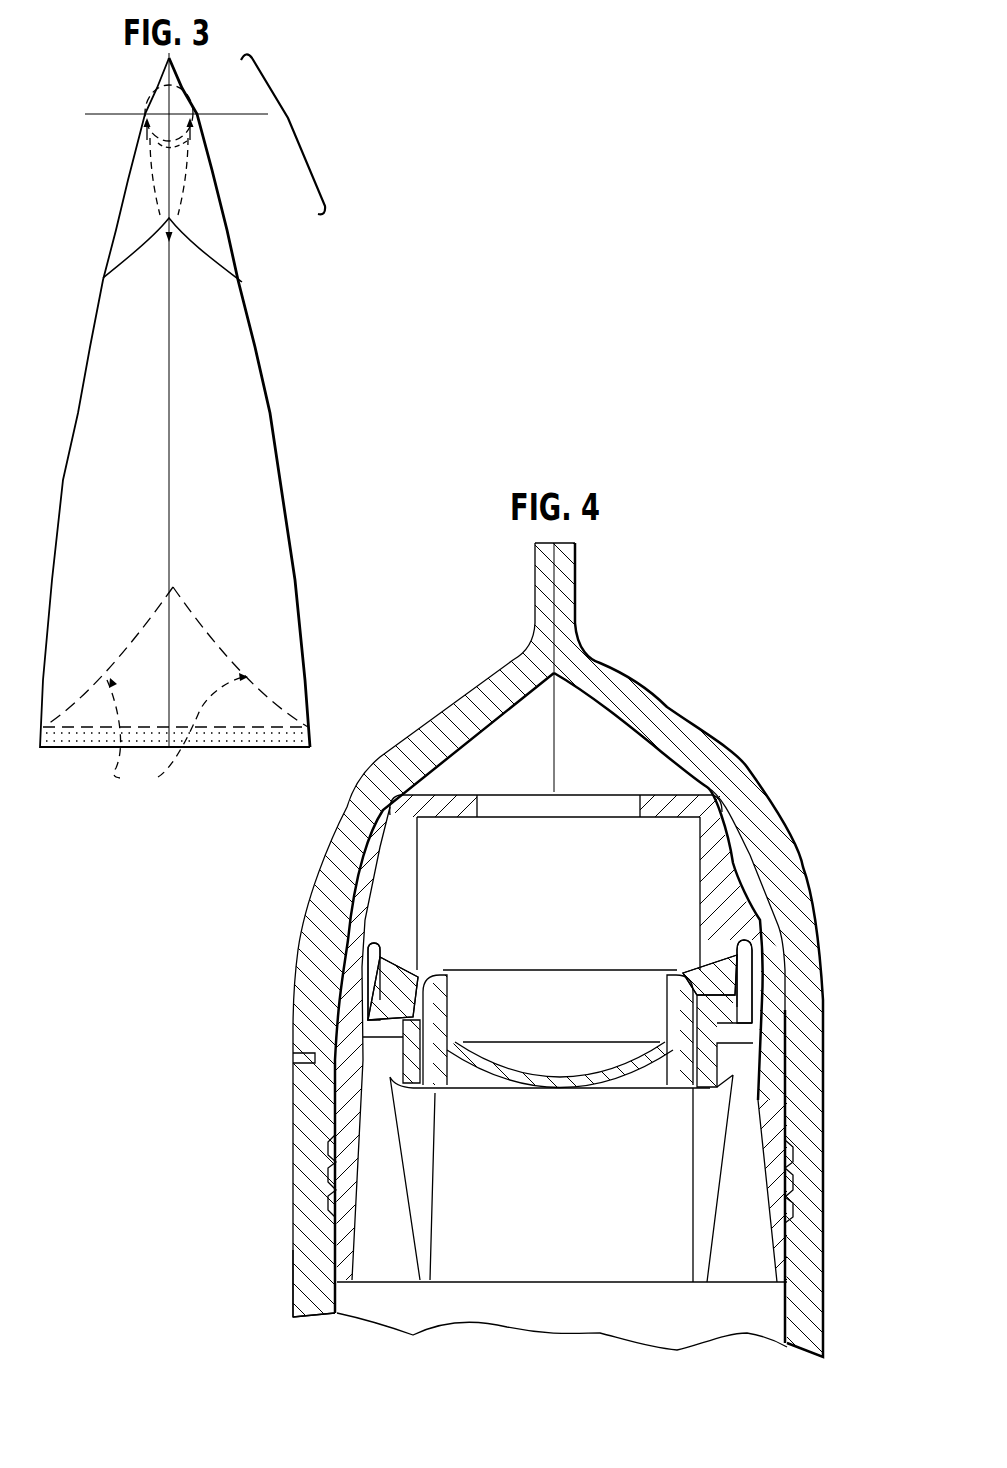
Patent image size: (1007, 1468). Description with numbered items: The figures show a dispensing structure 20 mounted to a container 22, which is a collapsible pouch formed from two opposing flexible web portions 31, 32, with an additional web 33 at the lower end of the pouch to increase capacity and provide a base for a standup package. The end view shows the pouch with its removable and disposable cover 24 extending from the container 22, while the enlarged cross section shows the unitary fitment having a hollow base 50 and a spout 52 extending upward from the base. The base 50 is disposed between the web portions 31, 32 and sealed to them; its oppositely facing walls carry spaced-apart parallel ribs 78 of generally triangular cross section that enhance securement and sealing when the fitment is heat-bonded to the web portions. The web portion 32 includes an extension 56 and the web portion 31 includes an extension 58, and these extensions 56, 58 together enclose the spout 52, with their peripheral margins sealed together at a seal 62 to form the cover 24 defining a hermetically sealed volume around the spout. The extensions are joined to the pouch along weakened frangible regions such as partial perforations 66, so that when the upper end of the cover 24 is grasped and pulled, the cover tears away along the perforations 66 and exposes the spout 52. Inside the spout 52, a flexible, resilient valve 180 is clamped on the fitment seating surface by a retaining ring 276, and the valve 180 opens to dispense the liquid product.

In FIG. 3, the dispensing structure 20 is at (149, 90).
In FIG. 4, the dispensing structure 20 is at (653, 776).
In FIG. 3, the container 22 is at (270, 391).
In FIG. 4, the container 22 is at (252, 1188).
In FIG. 3, the cover 24 is at (207, 134).
In FIG. 4, the cover 24 is at (462, 695).
In FIG. 3, the partial perforations 66 is at (185, 181).
In FIG. 4, the partial perforations 66 is at (293, 1057).
In FIG. 3, the additional web 33 is at (176, 689).
In FIG. 4, the seal 62 is at (557, 585).
In FIG. 4, the extension 58 is at (748, 773).
In FIG. 4, the spout 52 is at (737, 862).
In FIG. 4, the extension 56 is at (350, 812).
In FIG. 4, the valve 180 is at (472, 966).
In FIG. 4, the retaining ring 276 is at (723, 1052).
In FIG. 4, the ribs 78 is at (325, 1204).
In FIG. 4, the web portion 32 is at (292, 1260).
In FIG. 4, the hollow base 50 is at (728, 1290).
In FIG. 4, the web portion 31 is at (815, 1330).